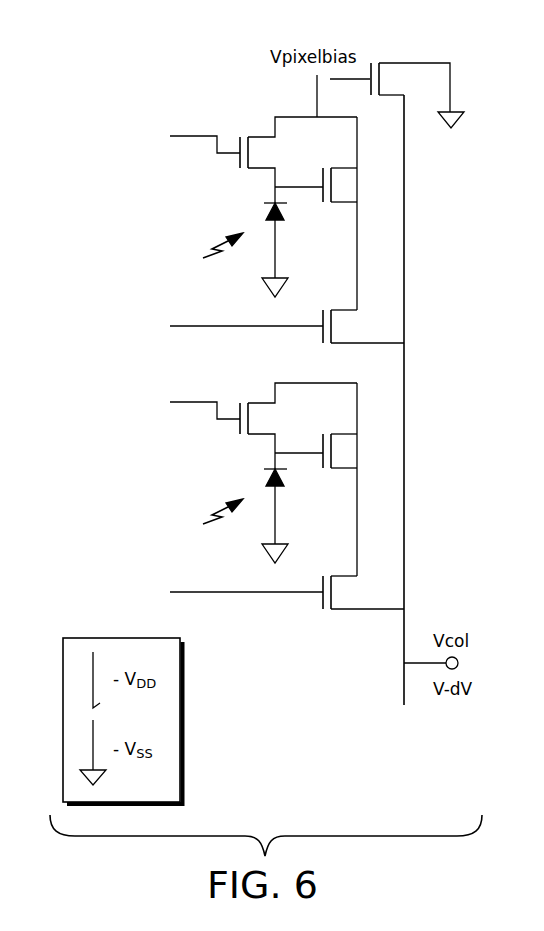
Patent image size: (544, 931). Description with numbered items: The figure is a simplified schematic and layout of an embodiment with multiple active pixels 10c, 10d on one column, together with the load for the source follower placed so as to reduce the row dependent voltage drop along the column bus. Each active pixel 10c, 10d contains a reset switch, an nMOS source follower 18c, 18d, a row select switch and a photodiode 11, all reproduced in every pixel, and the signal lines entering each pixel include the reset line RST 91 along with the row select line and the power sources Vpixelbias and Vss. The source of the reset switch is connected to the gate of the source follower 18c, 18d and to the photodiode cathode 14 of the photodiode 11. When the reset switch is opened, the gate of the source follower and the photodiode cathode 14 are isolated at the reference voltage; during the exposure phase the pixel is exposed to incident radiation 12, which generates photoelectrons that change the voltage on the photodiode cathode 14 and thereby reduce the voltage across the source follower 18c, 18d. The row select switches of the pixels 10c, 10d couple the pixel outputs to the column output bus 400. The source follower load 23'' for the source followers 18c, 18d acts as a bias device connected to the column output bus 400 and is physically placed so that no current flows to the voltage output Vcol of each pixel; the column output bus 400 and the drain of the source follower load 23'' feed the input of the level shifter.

The source follower load 23'' is at (415, 77).
The column output bus 400 is at (453, 134).
The reset line RST 91 is at (153, 168).
The photodiode cathode 14 is at (287, 184).
The photodiode 11 is at (272, 203).
The incident radiation 12 is at (218, 247).
The source follower 18c is at (351, 205).
The source follower 18d is at (351, 471).
The active pixel 10c is at (404, 215).
The active pixel 10d is at (404, 468).